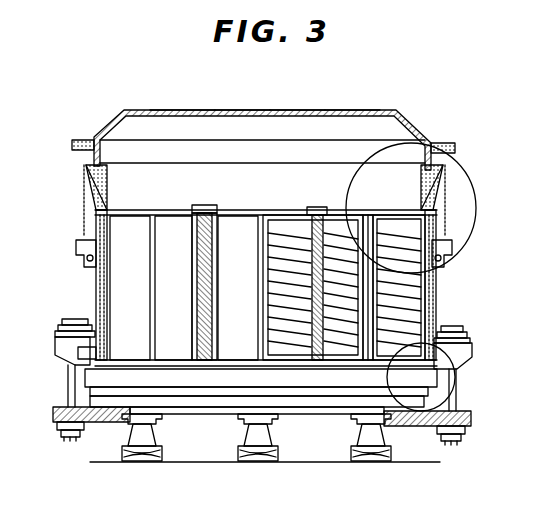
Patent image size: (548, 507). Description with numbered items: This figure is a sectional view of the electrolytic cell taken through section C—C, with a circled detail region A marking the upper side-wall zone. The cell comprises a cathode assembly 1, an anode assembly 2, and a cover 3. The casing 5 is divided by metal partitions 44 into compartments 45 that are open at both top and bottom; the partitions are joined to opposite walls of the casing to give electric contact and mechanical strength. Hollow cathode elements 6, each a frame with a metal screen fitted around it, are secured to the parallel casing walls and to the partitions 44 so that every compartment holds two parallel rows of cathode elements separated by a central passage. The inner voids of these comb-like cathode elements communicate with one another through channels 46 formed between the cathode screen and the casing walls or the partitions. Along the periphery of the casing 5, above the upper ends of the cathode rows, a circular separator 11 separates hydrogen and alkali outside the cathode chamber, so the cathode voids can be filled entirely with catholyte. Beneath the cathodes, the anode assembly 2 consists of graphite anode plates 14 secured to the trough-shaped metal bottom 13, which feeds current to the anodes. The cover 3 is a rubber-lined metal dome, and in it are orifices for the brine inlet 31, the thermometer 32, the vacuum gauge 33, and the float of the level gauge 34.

The cathode assembly 1 is at (440, 307).
The anode assembly 2 is at (122, 396).
The cover 3 is at (400, 112).
The casing 5 is at (97, 272).
The hollow cathode elements 6 is at (408, 339).
The circular separator 11 is at (88, 209).
The metal bottom 13 is at (90, 379).
The graphite anode plates 14 is at (168, 313).
The brine inlet 31 is at (298, 112).
The thermometer 32 is at (243, 112).
The vacuum gauge 33 is at (188, 112).
The level gauge 34 is at (346, 112).
The metal partitions 44 is at (331, 233).
The compartments 45 is at (388, 330).
The channels 46 is at (278, 290).
The detail circle A is at (476, 236).
The detail circle C is at (460, 410).